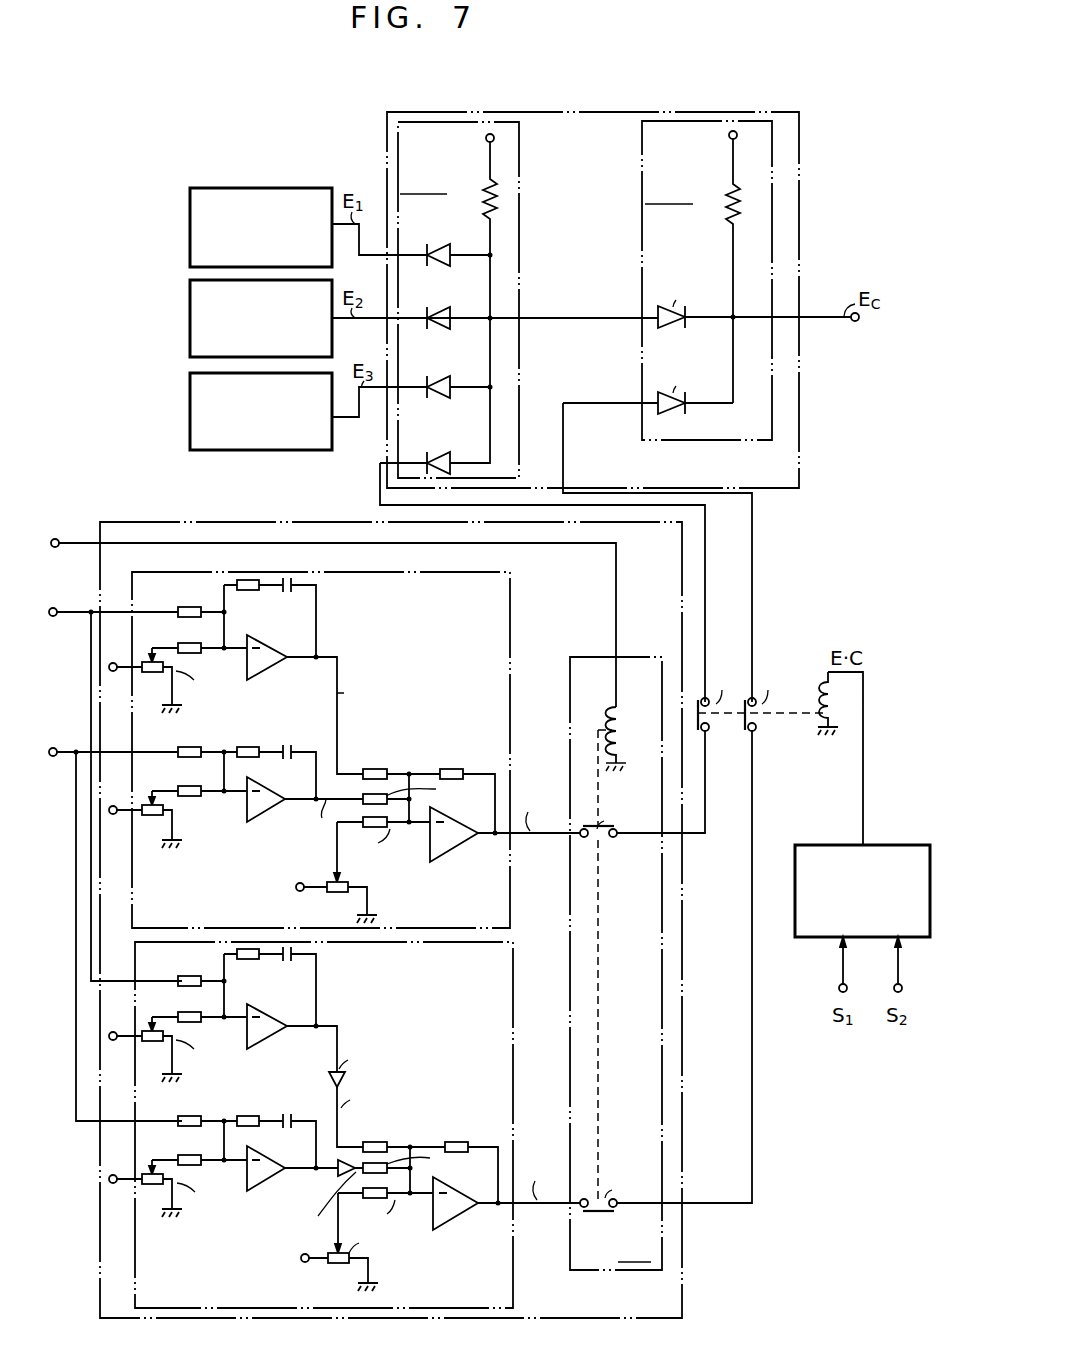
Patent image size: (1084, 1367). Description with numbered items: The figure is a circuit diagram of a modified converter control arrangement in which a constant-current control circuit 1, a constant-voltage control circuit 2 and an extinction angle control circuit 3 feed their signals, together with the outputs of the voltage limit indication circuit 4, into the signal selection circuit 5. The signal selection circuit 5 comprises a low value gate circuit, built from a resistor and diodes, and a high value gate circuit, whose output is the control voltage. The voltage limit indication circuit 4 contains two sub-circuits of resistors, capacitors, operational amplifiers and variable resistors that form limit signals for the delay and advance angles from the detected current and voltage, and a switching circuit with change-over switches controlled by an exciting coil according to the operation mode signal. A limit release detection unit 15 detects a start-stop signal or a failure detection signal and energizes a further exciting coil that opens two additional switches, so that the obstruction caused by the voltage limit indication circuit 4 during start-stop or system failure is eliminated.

The constant-current control circuit 1 is at (190, 240).
The constant-voltage control circuit 2 is at (190, 325).
The extinction angle control circuit 3 is at (190, 429).
The voltage limit indication circuit 4 is at (646, 578).
The signal selection circuit 5 is at (578, 173).
The limit release detection unit 15 is at (804, 940).